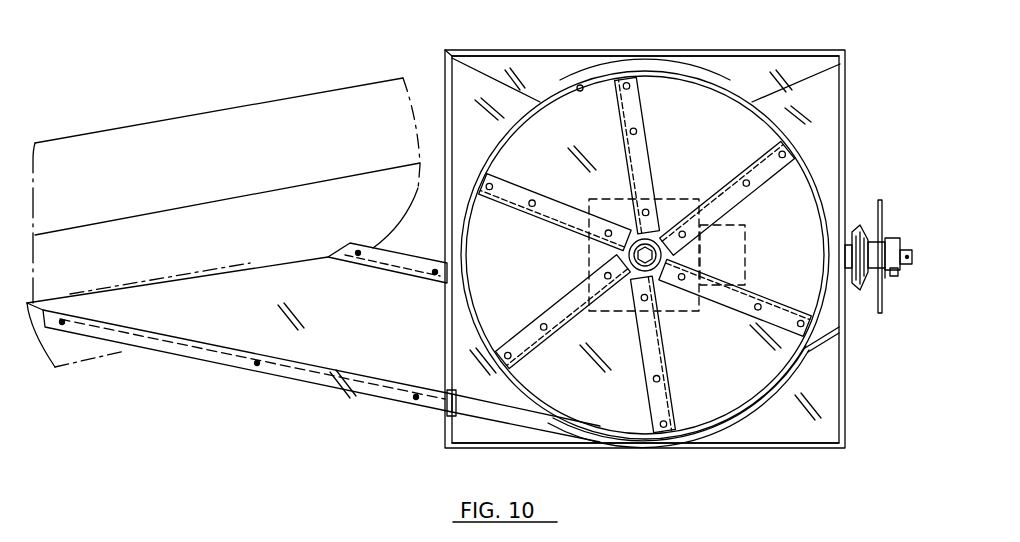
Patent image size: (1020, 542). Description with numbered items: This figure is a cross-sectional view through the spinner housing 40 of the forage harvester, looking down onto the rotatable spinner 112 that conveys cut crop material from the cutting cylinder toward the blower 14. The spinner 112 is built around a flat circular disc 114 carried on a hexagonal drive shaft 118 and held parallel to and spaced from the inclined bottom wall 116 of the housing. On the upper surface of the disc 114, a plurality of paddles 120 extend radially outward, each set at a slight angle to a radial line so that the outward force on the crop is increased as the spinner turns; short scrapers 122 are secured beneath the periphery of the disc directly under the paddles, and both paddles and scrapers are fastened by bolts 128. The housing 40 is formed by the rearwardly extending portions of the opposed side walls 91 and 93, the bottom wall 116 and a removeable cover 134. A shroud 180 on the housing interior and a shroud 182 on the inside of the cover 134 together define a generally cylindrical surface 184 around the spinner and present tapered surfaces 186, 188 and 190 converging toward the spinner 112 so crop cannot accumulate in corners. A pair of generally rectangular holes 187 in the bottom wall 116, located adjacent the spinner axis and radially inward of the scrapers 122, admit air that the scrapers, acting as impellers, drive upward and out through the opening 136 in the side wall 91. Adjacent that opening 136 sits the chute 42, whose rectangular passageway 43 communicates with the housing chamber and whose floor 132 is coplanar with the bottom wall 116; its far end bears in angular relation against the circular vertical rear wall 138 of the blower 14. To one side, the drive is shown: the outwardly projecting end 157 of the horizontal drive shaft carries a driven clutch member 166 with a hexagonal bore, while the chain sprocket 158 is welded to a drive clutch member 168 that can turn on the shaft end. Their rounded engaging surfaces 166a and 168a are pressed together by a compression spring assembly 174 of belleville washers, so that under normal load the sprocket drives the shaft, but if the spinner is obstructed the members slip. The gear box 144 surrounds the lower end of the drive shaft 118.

The blower 14 is at (235, 104).
The spinner housing 40 is at (852, 149).
The chute 42 is at (283, 378).
The rectangular passageway 43 is at (366, 373).
The side wall 91 is at (443, 48).
The side wall 93 is at (843, 72).
The rotatable spinner 112 is at (462, 329).
The flat circular disc 114 is at (736, 380).
The inclined bottom wall 116 is at (812, 405).
The hexagonal drive shaft 118 is at (639, 268).
The paddles 120 is at (625, 105).
The scrapers 122 is at (604, 166).
The bolts 128 is at (778, 158).
The floor 132 is at (296, 318).
The removeable cover 134 is at (700, 449).
The opening 136 is at (447, 286).
The circular vertical rear wall 138 is at (333, 206).
The gear box 144 is at (672, 186).
The outwardly projecting end 157 is at (912, 254).
The chain sprocket 158 is at (881, 200).
The driven clutch member 166 is at (899, 242).
The rounded engaging surface 166a is at (898, 273).
The drive clutch member 168 is at (887, 240).
The rounded engaging surface 168a is at (886, 278).
The compression spring assembly 174 is at (862, 218).
The shroud 180 is at (502, 78).
The shroud 182 is at (750, 436).
The generally cylindrical surface 184 is at (581, 85).
The tapered surface 186 is at (466, 82).
The generally rectangular holes 187 is at (589, 249).
The tapered surface 188 is at (693, 74).
The tapered surface 190 is at (808, 112).